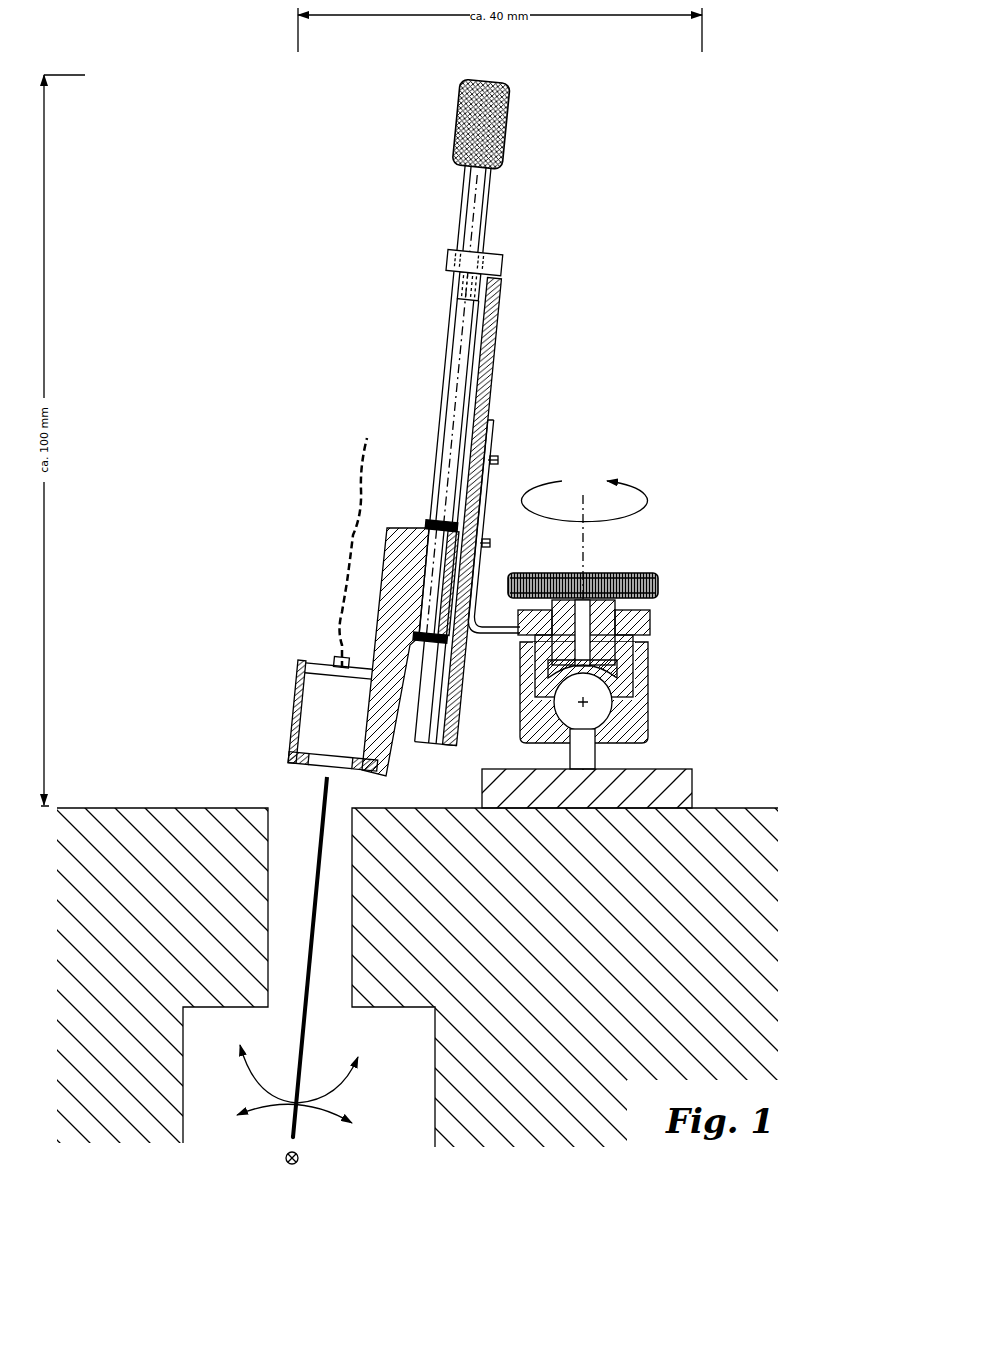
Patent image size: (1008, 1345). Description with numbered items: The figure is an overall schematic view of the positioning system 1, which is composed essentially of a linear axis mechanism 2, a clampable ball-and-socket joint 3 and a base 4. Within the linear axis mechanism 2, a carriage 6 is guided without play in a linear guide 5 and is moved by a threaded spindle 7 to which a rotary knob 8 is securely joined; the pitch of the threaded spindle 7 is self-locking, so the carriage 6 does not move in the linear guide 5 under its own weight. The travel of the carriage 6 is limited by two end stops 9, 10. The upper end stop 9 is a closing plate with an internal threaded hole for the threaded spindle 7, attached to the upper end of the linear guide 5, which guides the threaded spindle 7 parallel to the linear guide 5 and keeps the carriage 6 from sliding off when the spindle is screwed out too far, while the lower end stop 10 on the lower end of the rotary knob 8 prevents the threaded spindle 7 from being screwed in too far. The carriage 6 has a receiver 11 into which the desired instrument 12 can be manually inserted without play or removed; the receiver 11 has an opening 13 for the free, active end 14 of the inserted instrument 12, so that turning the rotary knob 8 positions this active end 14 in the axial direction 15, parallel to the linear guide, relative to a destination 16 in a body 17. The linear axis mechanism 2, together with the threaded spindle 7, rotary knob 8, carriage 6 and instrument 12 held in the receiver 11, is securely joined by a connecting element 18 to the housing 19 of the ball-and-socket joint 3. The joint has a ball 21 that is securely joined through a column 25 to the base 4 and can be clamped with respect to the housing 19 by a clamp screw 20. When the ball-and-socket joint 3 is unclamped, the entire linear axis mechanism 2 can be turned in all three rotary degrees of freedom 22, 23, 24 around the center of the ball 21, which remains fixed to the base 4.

The positioning system 1 is at (268, 123).
The linear axis mechanism 2 is at (624, 315).
The clampable ball-and-socket joint 3 is at (702, 633).
The base 4 is at (691, 803).
The linear guide 5 is at (489, 383).
The carriage 6 is at (395, 605).
The threaded spindle 7 is at (447, 375).
The rotary knob 8 is at (511, 155).
The upper end stop 9 is at (499, 265).
The lower end stop 10 is at (493, 176).
The receiver 11 is at (293, 715).
The instrument 12 is at (318, 703).
The opening 13 is at (312, 779).
The free, active end 14 is at (298, 1138).
The axial direction 15 is at (298, 997).
The destination 16 is at (279, 1161).
The body 17 is at (163, 808).
The connecting element 18 is at (497, 432).
The housing 19 is at (648, 683).
The clamp screw 20 is at (659, 588).
The ball 21 is at (592, 713).
The rotary degree of freedom 22 is at (276, 1112).
The rotary degree of freedom 23 is at (286, 1063).
The rotary degree of freedom 24 is at (585, 614).
The column 25 is at (589, 762).